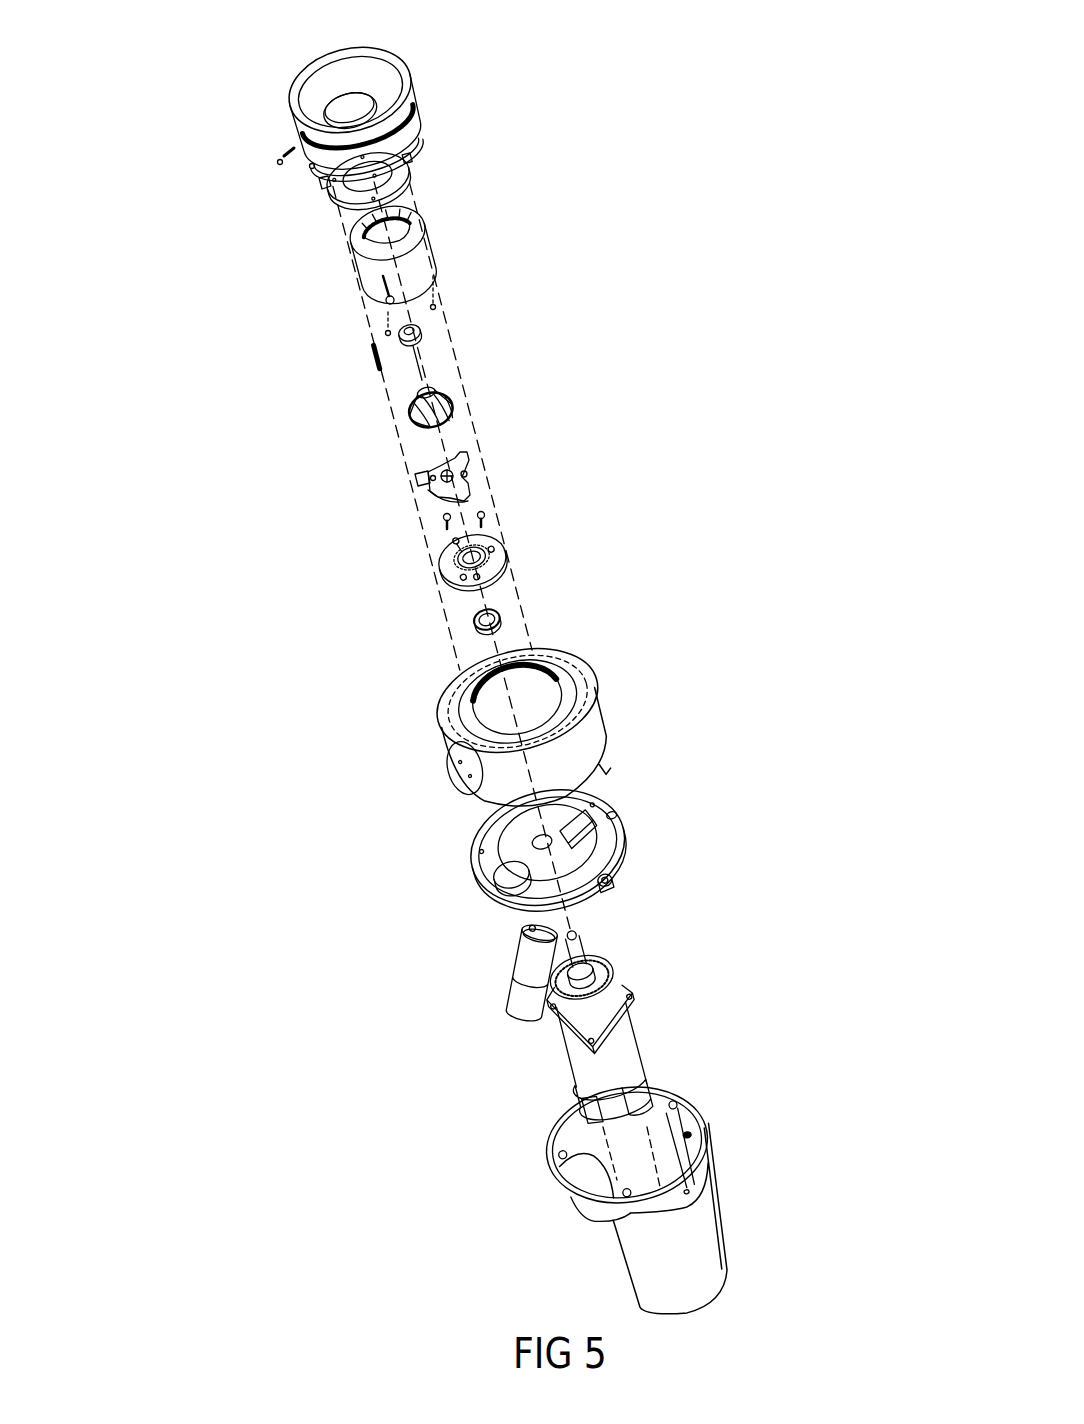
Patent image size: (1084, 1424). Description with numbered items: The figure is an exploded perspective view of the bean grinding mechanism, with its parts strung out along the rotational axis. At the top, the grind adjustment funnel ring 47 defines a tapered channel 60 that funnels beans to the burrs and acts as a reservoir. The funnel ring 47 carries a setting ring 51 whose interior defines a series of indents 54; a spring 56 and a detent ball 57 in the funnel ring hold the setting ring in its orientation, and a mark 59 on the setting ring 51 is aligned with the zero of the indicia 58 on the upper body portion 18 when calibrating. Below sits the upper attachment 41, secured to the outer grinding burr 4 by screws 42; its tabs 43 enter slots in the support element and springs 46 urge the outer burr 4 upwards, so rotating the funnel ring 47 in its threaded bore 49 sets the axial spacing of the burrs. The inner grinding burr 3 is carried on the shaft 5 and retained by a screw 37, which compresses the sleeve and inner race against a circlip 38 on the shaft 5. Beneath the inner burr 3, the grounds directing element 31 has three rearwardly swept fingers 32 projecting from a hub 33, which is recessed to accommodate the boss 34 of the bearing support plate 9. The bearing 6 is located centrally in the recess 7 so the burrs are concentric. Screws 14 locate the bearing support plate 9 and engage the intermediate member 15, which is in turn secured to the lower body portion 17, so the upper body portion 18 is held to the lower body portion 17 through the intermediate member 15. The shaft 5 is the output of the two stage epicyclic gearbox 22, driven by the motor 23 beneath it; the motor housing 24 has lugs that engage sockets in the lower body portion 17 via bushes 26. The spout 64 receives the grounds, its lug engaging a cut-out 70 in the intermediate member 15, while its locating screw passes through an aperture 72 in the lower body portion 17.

The tapered channel 60 is at (357, 72).
The grind adjustment funnel ring 47 is at (295, 75).
The indents 54 is at (410, 110).
The setting ring 51 is at (413, 137).
The spring 56 is at (288, 152).
The detent ball 57 is at (278, 162).
The mark 59 is at (312, 165).
The tabs 43 is at (323, 182).
The upper attachment 41 is at (410, 180).
The outer grinding burr 4 is at (415, 253).
The screws 42 is at (387, 302).
The springs 46 is at (373, 363).
The screw 37 is at (418, 338).
The inner grinding burr 3 is at (440, 393).
The grounds directing element 31 is at (467, 488).
The fingers 32 is at (430, 472).
The hub 33 is at (435, 497).
The screws 14 is at (480, 520).
The bearing support plate 9 is at (493, 562).
The boss 34 is at (437, 587).
The bearing 6 is at (500, 625).
The recess 7 is at (513, 693).
The threaded bore 49 is at (553, 692).
The indicia 58 is at (553, 743).
The upper body portion 18 is at (507, 780).
The intermediate member 15 is at (610, 823).
The cut-out 70 is at (512, 875).
The shaft 5 is at (575, 953).
The circlip 38 is at (595, 968).
The two stage epicyclic gearbox 22 is at (578, 1010).
The motor 23 is at (627, 1055).
The spout 64 is at (527, 988).
The lower body portion 17 is at (710, 1232).
The housing 24 is at (687, 1132).
The bushes 26 is at (640, 1120).
The aperture 72 is at (580, 1210).